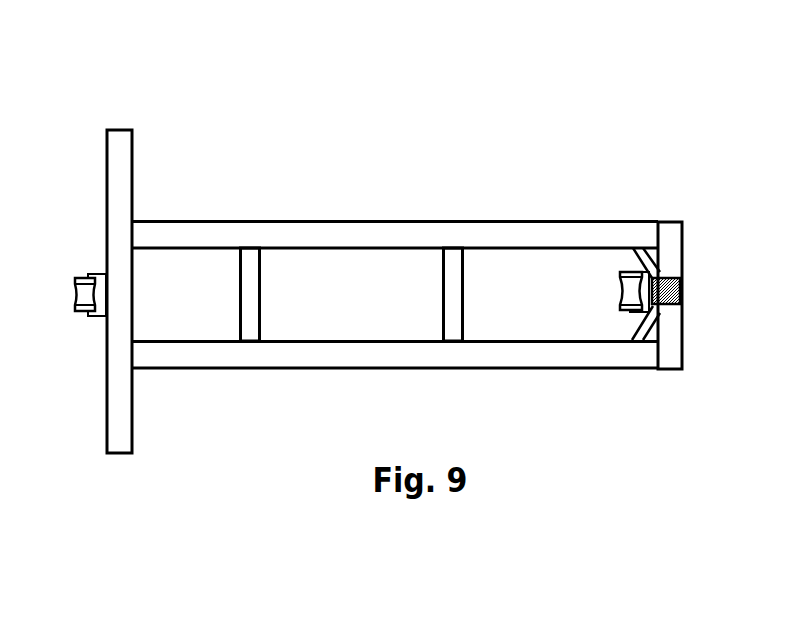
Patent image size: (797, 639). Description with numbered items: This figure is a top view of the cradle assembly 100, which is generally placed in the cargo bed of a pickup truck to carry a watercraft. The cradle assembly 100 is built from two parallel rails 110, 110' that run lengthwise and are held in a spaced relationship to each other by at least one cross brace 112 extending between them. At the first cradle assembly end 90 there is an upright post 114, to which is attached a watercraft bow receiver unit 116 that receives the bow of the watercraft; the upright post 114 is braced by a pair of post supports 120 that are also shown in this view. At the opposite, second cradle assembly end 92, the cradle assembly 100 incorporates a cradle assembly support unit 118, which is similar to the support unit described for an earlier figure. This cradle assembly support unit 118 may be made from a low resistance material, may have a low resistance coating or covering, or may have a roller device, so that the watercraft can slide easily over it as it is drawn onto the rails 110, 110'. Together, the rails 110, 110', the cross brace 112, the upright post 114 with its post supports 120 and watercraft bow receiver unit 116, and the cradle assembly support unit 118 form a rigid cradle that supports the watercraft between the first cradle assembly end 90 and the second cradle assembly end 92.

The cradle assembly 100 is at (303, 37).
The second cradle assembly end 92 is at (107, 232).
The first cradle assembly end 90 is at (673, 222).
The rail 110 is at (395, 218).
The rail 110' is at (395, 385).
The cross brace 112 is at (443, 268).
The upright post 114 is at (680, 292).
The watercraft bow receiver unit 116 is at (612, 290).
The cradle assembly support unit 118 is at (85, 318).
The post supports 120 is at (650, 323).